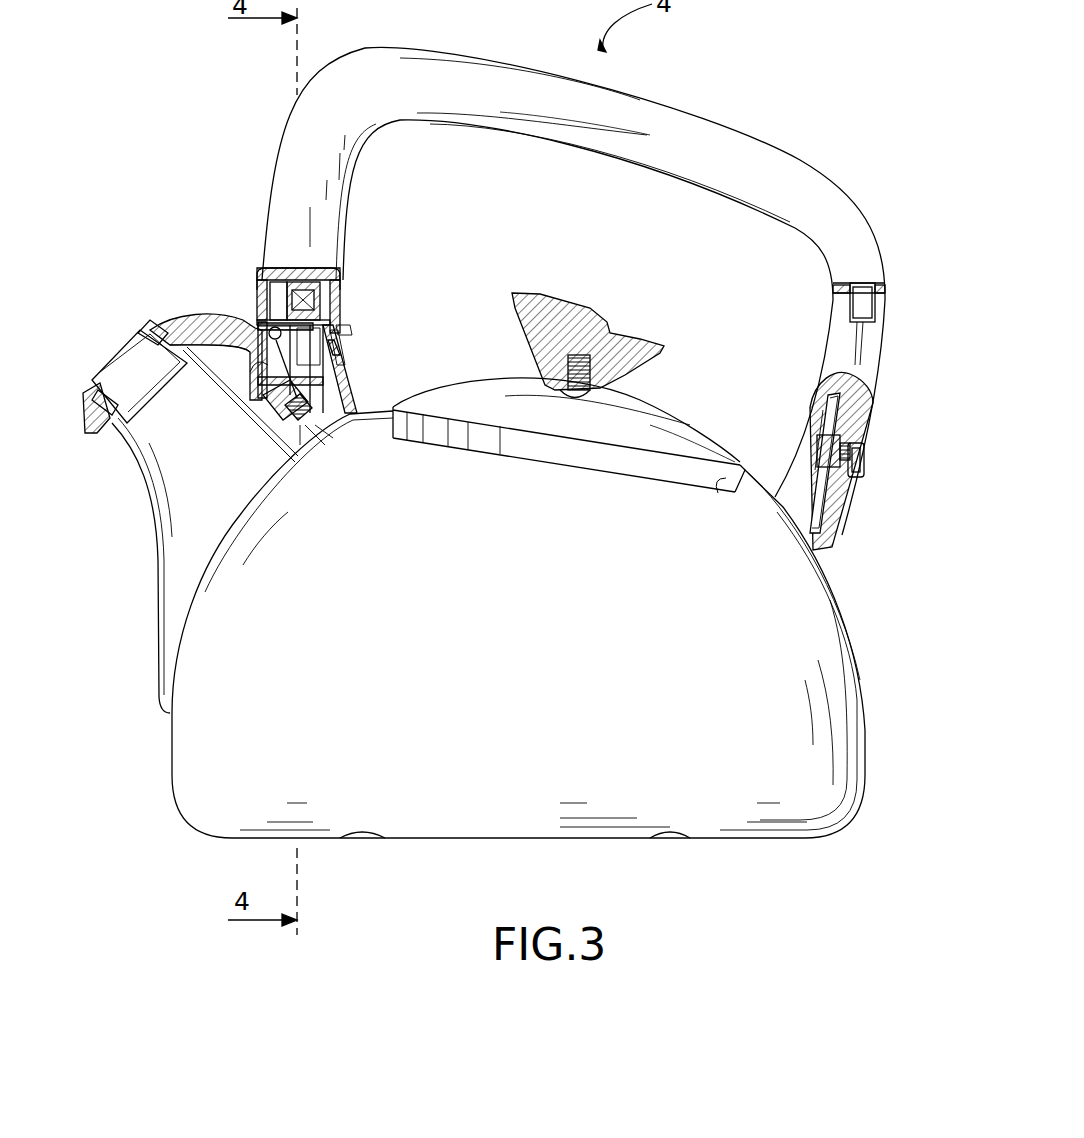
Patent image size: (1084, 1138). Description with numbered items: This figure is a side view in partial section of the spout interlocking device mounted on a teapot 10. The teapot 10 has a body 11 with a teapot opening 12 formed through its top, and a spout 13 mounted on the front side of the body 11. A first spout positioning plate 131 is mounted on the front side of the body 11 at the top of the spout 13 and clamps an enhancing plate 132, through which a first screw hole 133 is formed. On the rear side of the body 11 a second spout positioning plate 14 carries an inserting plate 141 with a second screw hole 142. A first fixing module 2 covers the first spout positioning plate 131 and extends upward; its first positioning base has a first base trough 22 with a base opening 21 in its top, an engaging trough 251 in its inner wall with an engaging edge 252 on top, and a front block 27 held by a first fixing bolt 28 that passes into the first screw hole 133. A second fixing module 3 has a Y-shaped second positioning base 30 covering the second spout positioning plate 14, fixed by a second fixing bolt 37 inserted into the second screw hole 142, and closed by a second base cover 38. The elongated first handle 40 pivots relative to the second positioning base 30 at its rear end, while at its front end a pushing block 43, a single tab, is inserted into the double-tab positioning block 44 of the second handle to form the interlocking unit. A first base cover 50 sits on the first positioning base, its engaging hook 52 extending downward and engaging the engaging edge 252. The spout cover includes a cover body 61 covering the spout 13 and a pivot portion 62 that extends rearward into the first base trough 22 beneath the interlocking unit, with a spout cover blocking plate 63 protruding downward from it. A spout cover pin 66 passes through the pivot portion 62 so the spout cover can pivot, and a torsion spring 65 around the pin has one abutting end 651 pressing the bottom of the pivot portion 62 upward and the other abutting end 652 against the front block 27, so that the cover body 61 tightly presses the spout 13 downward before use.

The first fixing module 2 is at (366, 398).
The second fixing module 3 is at (800, 388).
The teapot 10 is at (752, 852).
The body 11 is at (850, 624).
The teapot opening 12 is at (720, 493).
The spout 13 is at (125, 433).
The second spout positioning plate 14 is at (818, 498).
The base opening 21 is at (318, 318).
The first base trough 22 is at (310, 358).
The front block 27 is at (265, 405).
The first fixing bolt 28 is at (280, 425).
The second positioning base 30 is at (870, 350).
The second fixing bolt 37 is at (866, 462).
The second base cover 38 is at (868, 448).
The first handle 40 is at (660, 132).
The pushing block 43 is at (262, 300).
The positioning block 44 is at (305, 285).
The first base cover 50 is at (300, 270).
The engaging hook 52 is at (332, 352).
The cover body 61 is at (153, 340).
The pivot portion 62 is at (270, 328).
The spout cover blocking plate 63 is at (245, 370).
The torsion spring 65 is at (255, 335).
The spout cover pin 66 is at (247, 325).
The first spout positioning plate 131 is at (296, 440).
The enhancing plate 132 is at (300, 425).
The first screw hole 133 is at (306, 440).
The inserting plate 141 is at (860, 415).
The second screw hole 142 is at (812, 440).
The engaging trough 251 is at (325, 388).
The engaging edge 252 is at (330, 368).
The abutting end 651 is at (342, 330).
The abutting end 652 is at (252, 385).